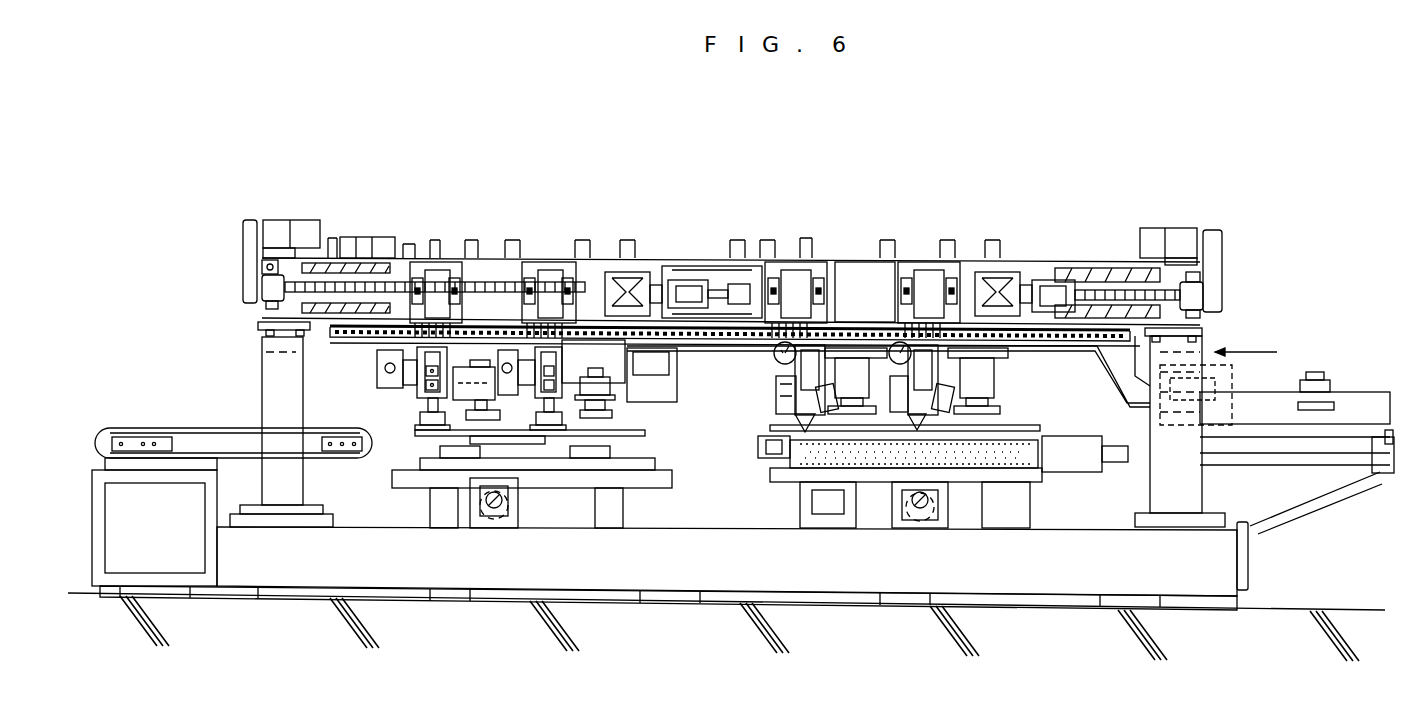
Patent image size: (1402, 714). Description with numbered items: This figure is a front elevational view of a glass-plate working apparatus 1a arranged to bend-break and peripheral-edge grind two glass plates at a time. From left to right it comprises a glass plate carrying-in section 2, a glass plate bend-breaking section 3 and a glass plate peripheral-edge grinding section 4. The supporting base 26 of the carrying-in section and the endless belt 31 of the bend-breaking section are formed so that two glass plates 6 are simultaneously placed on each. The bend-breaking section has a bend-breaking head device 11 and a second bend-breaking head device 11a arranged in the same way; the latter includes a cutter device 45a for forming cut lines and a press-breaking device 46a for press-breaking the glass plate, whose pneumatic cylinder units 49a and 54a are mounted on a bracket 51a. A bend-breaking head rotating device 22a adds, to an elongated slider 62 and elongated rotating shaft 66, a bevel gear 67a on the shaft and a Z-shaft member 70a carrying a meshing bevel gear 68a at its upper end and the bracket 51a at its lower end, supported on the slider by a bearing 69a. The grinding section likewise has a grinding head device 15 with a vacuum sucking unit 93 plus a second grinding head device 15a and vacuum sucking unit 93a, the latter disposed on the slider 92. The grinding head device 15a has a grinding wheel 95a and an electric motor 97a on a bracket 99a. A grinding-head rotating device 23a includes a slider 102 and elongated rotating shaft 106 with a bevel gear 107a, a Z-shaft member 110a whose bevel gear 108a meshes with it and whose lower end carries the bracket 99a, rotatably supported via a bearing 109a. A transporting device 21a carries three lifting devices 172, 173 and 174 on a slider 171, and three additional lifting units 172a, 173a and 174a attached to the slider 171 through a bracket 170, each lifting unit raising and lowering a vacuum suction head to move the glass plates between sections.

The glass-plate working apparatus 1a is at (1100, 233).
The glass plate carrying-in section 2 is at (1285, 511).
The glass plate bend-breaking section 3 is at (762, 468).
The glass plate peripheral-edge grinding section 4 is at (412, 494).
The glass plate 6 is at (625, 437).
The bend-breaking head device 11 is at (982, 413).
The bend-breaking head device 11a is at (764, 400).
The grinding head device 15 is at (560, 440).
The grinding head device 15a is at (413, 406).
The transporting device 21a is at (1358, 380).
The bend-breaking head rotating device 22a is at (995, 232).
The grinding-head rotating device 23a is at (653, 254).
The supporting base 26 is at (1370, 472).
The endless belt 31 is at (758, 448).
The cutter device 45a is at (796, 406).
The press-breaking device 46a is at (832, 432).
The pneumatic cylinder unit 49a is at (776, 392).
The bracket 51a is at (774, 354).
The pneumatic cylinder unit 54a is at (822, 436).
The slider 62 is at (1018, 275).
The rotating shaft 66 is at (865, 292).
The bevel gear 67a is at (830, 225).
The bevel gear 68a is at (812, 218).
The bearing 69a is at (800, 305).
The Z-shaft member 70a is at (790, 277).
The slider 92 is at (650, 478).
The vacuum sucking unit 93 is at (615, 436).
The vacuum sucking unit 93a is at (446, 450).
The grinding wheel 95a is at (432, 436).
The electric motor 97a is at (418, 386).
The bracket 99a is at (384, 360).
The slider 102 is at (676, 214).
The rotating shaft 106 is at (448, 218).
The bevel gear 107a is at (446, 262).
The bevel gear 108a is at (433, 260).
The bearing 109a is at (407, 258).
The Z-shaft member 110a is at (467, 300).
The bracket 170 is at (984, 378).
The slider 171 is at (692, 350).
The lifting device 172 is at (1308, 368).
The lifting unit 172a is at (1212, 386).
The lifting device 173 is at (978, 420).
The lifting unit 173a is at (896, 428).
The lifting device 174 is at (590, 440).
The lifting unit 174a is at (480, 440).